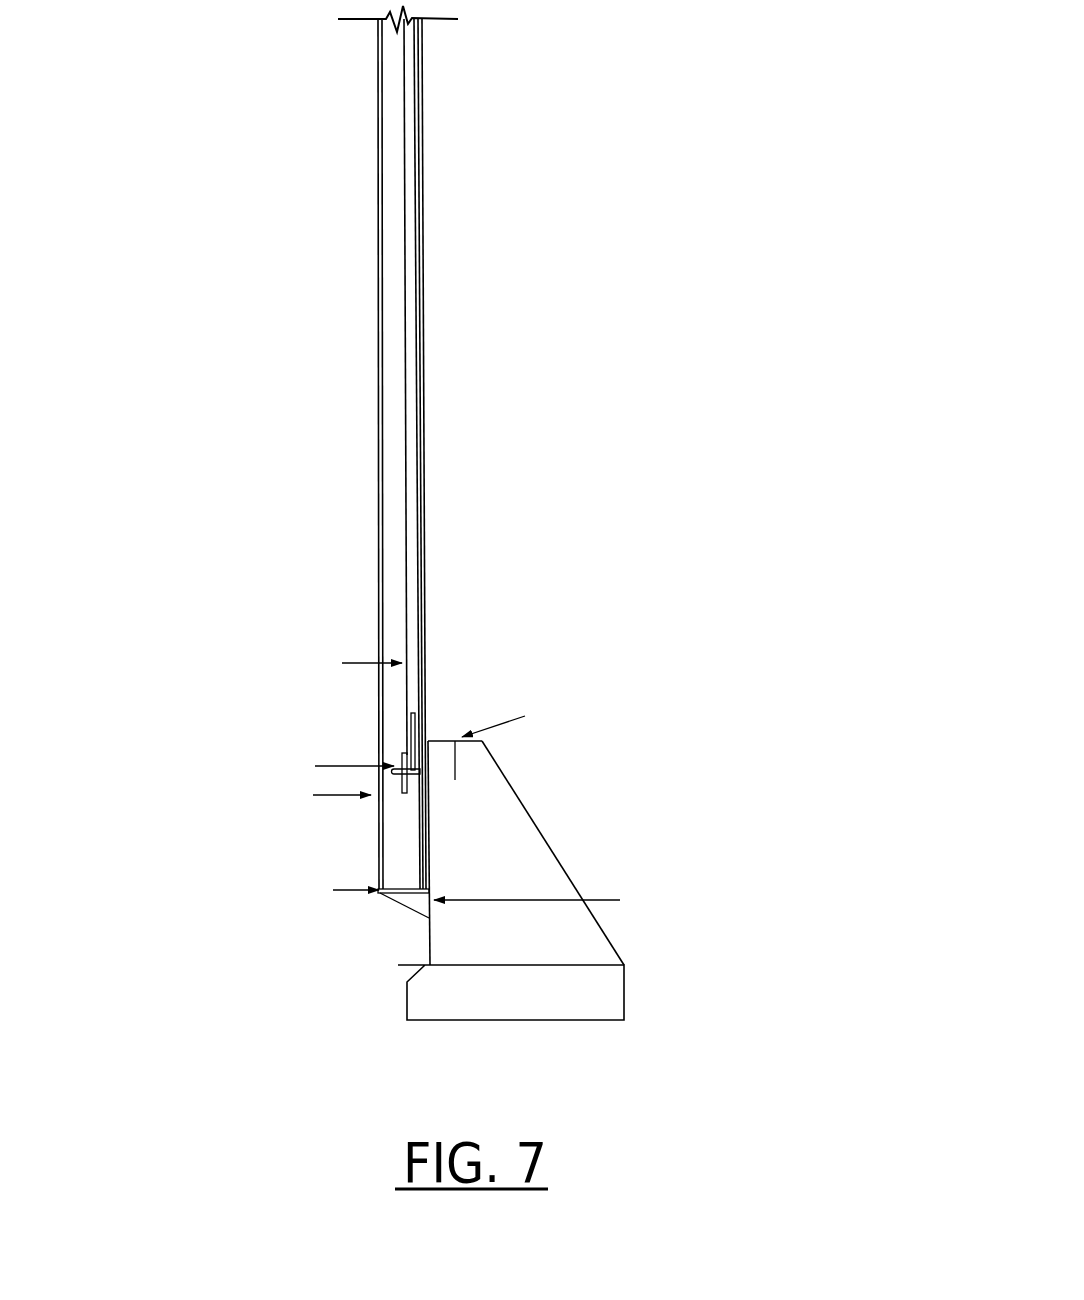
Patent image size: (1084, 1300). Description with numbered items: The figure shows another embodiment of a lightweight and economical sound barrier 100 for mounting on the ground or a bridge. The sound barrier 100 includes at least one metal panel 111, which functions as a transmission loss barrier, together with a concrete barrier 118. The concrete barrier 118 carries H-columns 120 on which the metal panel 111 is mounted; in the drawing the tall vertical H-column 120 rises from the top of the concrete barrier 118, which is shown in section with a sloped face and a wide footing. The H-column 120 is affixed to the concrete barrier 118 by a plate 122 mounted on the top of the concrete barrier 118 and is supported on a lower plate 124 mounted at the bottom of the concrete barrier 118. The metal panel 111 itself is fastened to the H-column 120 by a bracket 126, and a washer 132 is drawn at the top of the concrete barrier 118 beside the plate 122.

The lightweight and economical sound barrier 100 is at (268, 405).
The metal panel 111 is at (417, 507).
The concrete barrier 118 is at (521, 796).
The H-column 120 is at (395, 43).
The plate 122 is at (445, 738).
The lower plate 124 is at (404, 911).
The bracket 126 is at (394, 788).
The washer plate 132 is at (462, 774).